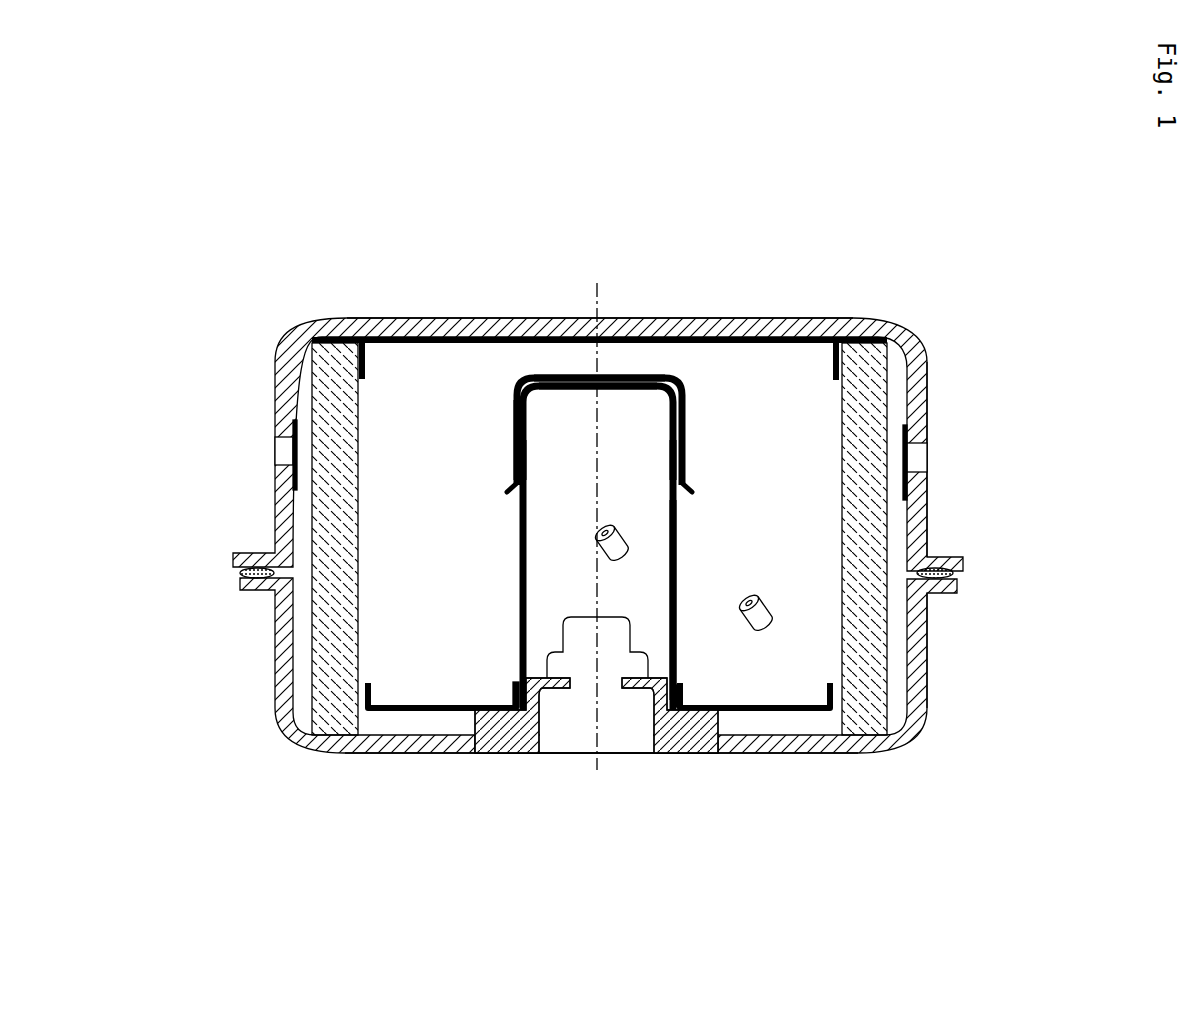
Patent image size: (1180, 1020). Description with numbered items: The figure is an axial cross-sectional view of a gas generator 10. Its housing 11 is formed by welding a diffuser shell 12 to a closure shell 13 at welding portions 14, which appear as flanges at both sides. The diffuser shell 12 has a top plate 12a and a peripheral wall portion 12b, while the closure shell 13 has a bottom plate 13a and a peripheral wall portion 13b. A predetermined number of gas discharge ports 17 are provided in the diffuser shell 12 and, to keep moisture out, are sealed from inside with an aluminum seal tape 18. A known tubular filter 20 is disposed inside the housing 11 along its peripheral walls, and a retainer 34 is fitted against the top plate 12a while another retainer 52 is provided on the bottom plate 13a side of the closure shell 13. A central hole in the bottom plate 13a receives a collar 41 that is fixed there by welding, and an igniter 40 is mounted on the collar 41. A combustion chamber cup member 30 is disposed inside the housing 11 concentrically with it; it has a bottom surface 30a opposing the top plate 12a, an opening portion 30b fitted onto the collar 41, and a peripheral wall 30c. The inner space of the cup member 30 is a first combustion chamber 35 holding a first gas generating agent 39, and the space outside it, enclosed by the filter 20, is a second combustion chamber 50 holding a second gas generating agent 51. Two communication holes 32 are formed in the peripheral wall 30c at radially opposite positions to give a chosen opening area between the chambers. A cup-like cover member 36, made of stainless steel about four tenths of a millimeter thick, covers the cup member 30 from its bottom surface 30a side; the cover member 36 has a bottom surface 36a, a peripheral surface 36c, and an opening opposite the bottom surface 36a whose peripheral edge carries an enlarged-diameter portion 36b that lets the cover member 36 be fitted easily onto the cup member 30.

The gas generator 10 is at (666, 295).
The housing 11 is at (1040, 522).
The diffuser shell 12 is at (940, 522).
The top plate 12a is at (440, 323).
The peripheral wall portion 12b is at (922, 403).
The closure shell 13 is at (941, 623).
The bottom plate 13a is at (781, 754).
The peripheral wall portion 13b is at (917, 682).
The welding portion 14 is at (238, 574).
The gas discharge port 17 is at (917, 461).
The aluminum seal tape 18 is at (306, 477).
The tubular filter 20 is at (320, 657).
The combustion chamber cup member 30 is at (688, 514).
The bottom surface 30a is at (608, 390).
The opening portion 30b is at (676, 720).
The peripheral wall 30c is at (679, 566).
The communication hole 32 is at (530, 457).
The retainer 34 is at (753, 348).
The first combustion chamber 35 is at (573, 528).
The cover member 36 is at (504, 378).
The bottom surface 36a is at (565, 376).
The enlarged-diameter portion 36b is at (505, 490).
The peripheral surface 36c is at (517, 430).
The first gas generating agent 39 is at (615, 561).
The igniter 40 is at (566, 744).
The collar 41 is at (503, 747).
The second combustion chamber 50 is at (453, 598).
The second gas generating agent 51 is at (760, 628).
The retainer 52 is at (422, 703).